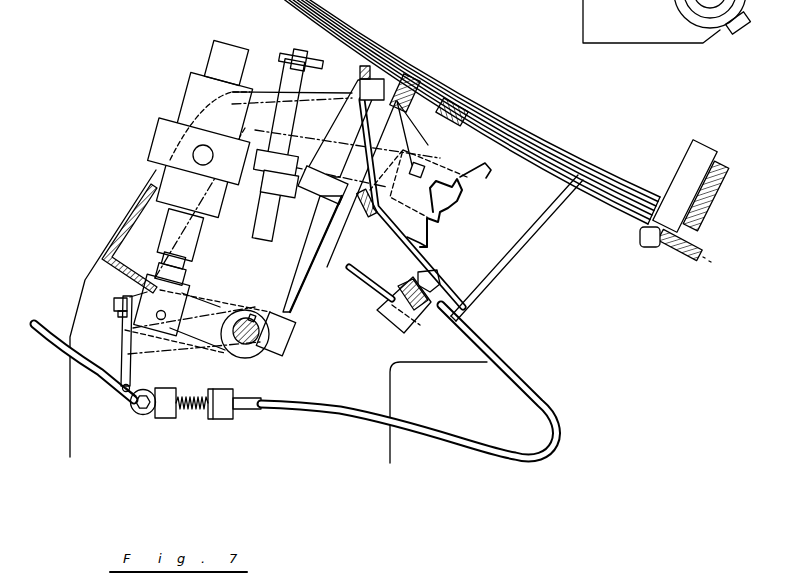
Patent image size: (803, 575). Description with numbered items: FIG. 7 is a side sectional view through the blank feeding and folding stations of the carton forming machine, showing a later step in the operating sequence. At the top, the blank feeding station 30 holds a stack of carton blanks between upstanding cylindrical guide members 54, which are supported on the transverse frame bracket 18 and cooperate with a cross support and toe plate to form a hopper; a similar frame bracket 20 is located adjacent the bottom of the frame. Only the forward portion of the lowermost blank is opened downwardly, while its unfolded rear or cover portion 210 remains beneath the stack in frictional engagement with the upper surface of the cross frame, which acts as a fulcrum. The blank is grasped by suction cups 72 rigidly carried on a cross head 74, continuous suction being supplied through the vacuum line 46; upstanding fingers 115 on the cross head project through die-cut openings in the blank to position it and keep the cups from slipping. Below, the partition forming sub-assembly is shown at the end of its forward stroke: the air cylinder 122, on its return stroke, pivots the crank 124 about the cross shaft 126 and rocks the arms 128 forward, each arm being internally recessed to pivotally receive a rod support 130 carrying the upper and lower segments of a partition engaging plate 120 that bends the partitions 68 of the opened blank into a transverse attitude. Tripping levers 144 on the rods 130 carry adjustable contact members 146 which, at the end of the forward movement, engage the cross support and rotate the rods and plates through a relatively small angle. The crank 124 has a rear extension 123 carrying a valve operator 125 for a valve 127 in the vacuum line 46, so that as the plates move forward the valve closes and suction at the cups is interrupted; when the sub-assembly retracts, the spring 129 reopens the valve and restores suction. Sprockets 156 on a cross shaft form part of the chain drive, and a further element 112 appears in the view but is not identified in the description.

The transverse frame bracket 18 is at (704, 202).
The frame bracket 20 is at (123, 223).
The blank feeding station 30 is at (489, 131).
The vacuum line 46 is at (318, 410).
The upstanding cylindrical guide members 54 is at (690, 162).
The partitions 68 is at (483, 165).
The suction cups 72 is at (470, 257).
The cross head 74 is at (392, 320).
The rod 112 is at (375, 296).
The upstanding fingers 115 is at (462, 290).
The partition engaging plates 120 is at (352, 111).
The air cylinder 122 is at (190, 95).
The rear extension 123 is at (114, 300).
The crank 124 is at (201, 306).
The valve operator 125 is at (131, 367).
The cross shaft 126 is at (240, 360).
The valve 127 is at (168, 405).
The arms 128 is at (238, 220).
The spring 129 is at (192, 410).
The rod support 130 is at (276, 131).
The tripping levers 144 is at (372, 78).
The adjustable contact members 146 is at (318, 50).
The sprockets 156 is at (690, 5).
The unfolded rear or cover portion 210 is at (296, 9).